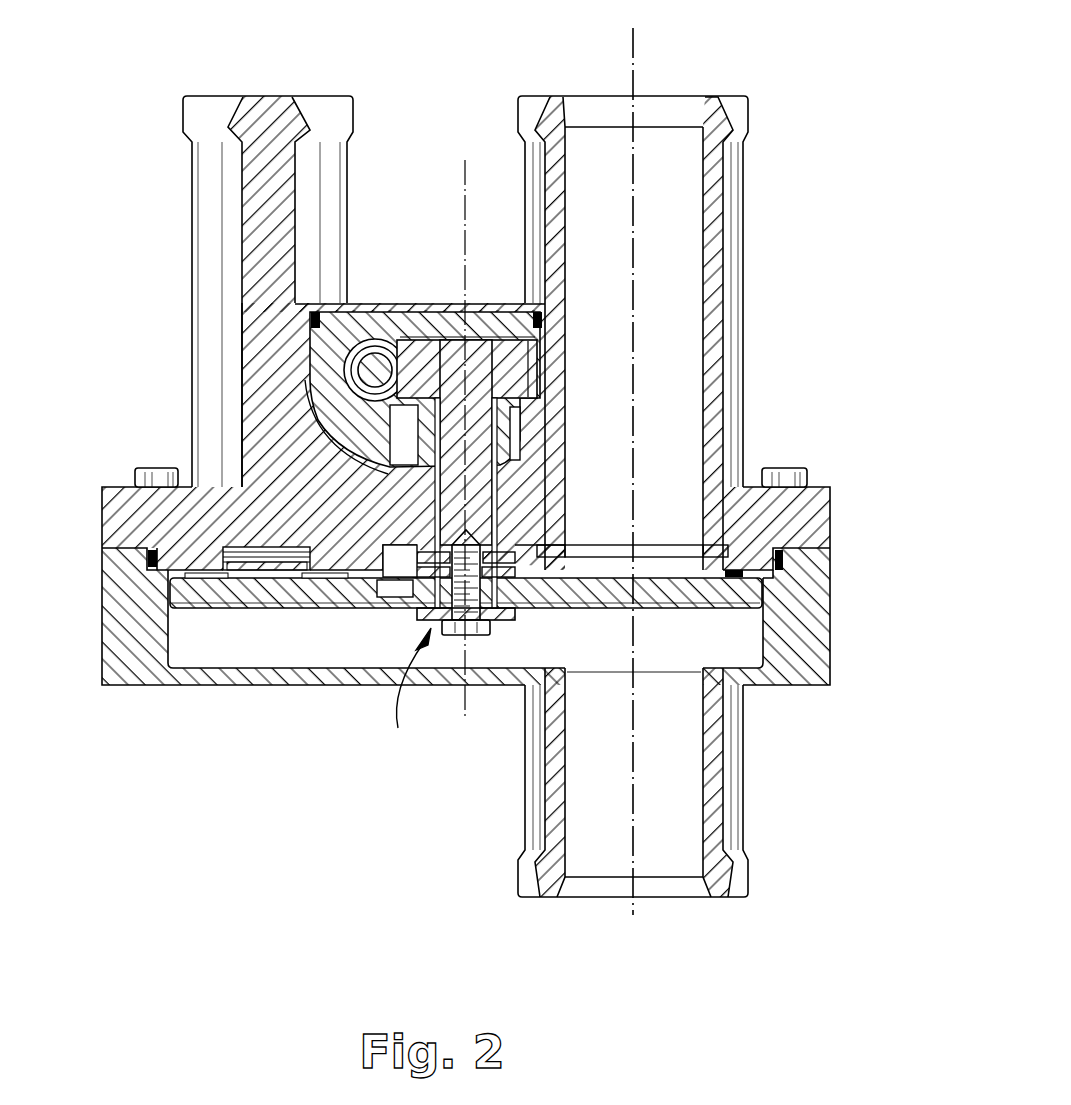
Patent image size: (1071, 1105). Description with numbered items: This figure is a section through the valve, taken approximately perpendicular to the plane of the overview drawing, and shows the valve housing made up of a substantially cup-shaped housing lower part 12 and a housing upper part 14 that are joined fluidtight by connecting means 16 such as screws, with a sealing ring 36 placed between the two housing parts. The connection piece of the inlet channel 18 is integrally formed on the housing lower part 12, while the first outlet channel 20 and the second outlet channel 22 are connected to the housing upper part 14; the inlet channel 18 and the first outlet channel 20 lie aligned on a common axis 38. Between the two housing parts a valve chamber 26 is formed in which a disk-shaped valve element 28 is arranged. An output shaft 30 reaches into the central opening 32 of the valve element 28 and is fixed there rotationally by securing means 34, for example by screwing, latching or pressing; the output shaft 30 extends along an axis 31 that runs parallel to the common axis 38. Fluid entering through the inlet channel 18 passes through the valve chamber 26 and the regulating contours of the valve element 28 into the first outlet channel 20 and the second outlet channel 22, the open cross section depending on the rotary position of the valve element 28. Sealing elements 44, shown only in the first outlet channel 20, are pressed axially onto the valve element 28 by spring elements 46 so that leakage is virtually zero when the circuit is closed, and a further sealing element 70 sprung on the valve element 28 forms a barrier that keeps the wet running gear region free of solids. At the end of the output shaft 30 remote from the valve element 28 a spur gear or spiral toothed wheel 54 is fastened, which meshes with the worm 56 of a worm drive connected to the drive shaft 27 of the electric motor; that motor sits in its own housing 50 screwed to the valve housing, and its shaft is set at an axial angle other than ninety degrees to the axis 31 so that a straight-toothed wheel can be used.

The housing lower part 12 is at (125, 638).
The housing upper part 14 is at (135, 513).
The connecting means 16 is at (150, 470).
The connection piece of inlet channel 18 is at (735, 805).
The first outlet channel 20 is at (720, 242).
The second outlet channel 22 is at (215, 198).
The valve chamber 26 is at (198, 643).
The drive shaft of electric motor 27 is at (368, 352).
The valve element 28 is at (740, 595).
The output shaft 30 is at (472, 340).
The axis of drive shaft 31 is at (462, 175).
The central opening 32 is at (410, 605).
The securing means 34 is at (403, 694).
The sealing ring 36 is at (145, 555).
The common axis 38 is at (636, 40).
The sealing elements 44 is at (552, 585).
The spring elements 46 is at (760, 530).
The housing of actuating drive 50 is at (330, 340).
The spiral toothed wheel 54 is at (510, 370).
The worm 56 is at (357, 370).
The sealing element 70 is at (530, 545).